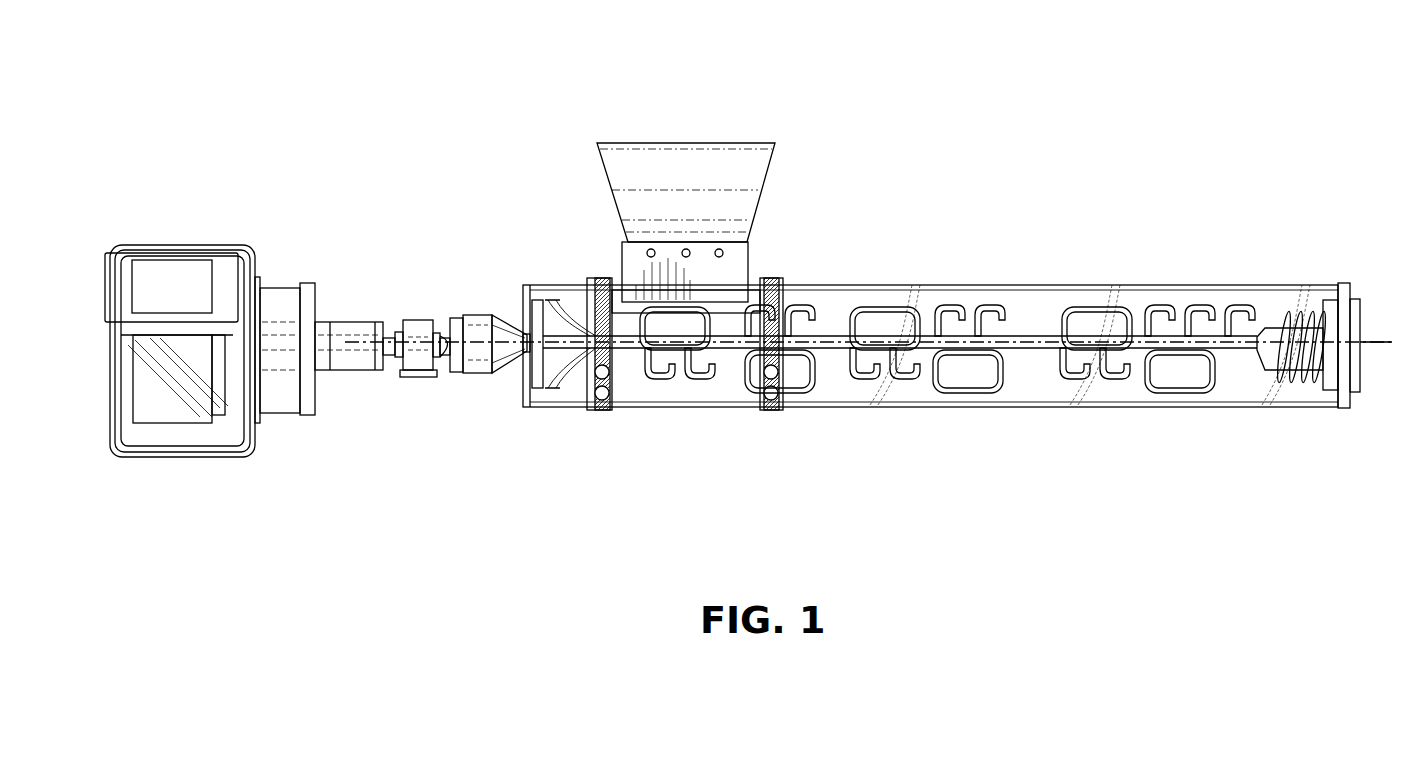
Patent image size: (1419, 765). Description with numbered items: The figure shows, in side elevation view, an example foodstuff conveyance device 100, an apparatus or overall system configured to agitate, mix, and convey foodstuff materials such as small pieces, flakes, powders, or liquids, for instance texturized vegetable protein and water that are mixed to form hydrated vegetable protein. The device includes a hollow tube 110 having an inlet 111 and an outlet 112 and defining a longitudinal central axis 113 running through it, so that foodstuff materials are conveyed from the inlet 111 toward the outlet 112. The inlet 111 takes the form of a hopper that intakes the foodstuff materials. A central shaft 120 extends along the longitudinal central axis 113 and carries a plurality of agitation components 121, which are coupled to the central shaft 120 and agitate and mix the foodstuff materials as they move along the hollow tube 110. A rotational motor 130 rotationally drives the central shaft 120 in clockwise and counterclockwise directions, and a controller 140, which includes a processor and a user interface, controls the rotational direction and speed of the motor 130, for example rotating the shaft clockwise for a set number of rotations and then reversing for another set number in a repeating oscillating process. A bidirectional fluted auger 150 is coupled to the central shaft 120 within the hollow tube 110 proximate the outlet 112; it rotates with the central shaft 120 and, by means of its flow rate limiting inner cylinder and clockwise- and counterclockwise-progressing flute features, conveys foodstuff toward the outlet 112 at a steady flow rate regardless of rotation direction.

The foodstuff conveyance device 100 is at (326, 167).
The hollow tube 110 is at (1046, 285).
The inlet 111 is at (698, 140).
The outlet 112 is at (1357, 394).
The longitudinal central axis 113 is at (1365, 320).
The central shaft 120 is at (480, 374).
The agitation components 121 is at (977, 380).
The rotational motor 130 is at (318, 410).
The controller 140 is at (185, 412).
The bidirectional fluted auger 150 is at (1275, 312).